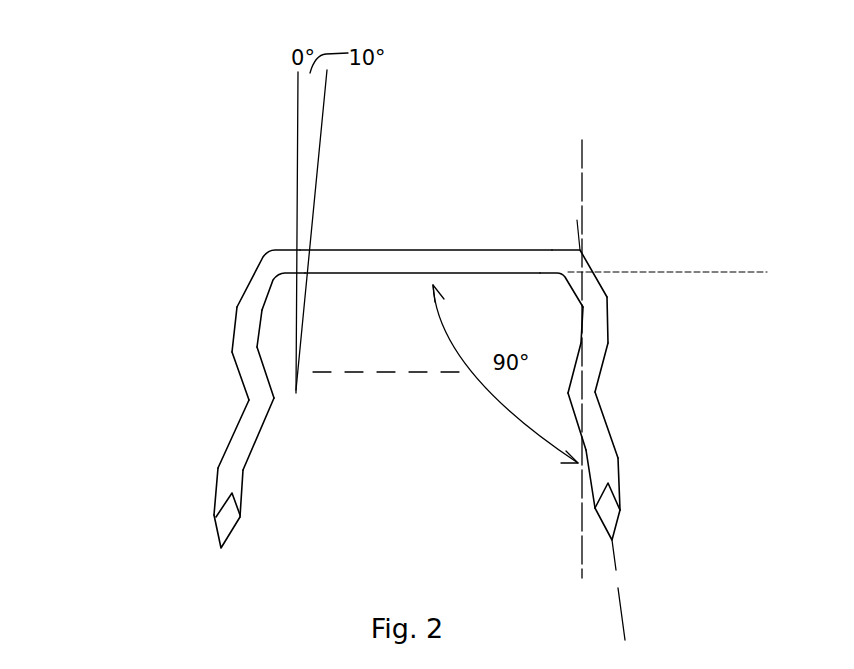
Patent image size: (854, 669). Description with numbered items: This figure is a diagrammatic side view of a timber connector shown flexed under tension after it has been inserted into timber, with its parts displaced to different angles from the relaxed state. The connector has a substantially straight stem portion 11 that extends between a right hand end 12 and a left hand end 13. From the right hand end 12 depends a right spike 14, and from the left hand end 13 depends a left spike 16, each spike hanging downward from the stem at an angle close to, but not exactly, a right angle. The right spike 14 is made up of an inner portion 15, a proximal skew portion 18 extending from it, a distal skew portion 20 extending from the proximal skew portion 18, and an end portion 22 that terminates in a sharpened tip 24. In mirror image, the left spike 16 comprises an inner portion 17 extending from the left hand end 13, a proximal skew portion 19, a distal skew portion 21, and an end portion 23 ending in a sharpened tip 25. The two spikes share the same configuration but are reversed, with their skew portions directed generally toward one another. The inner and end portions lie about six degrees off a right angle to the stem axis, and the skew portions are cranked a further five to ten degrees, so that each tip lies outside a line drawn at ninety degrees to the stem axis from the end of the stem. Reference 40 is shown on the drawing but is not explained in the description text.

The stem portion 11 is at (388, 262).
The right hand end 12 is at (562, 267).
The left hand end 13 is at (272, 263).
The right spike 14 is at (605, 390).
The inner portion 15 is at (617, 287).
The left spike 16 is at (215, 370).
The inner portion 17 is at (200, 300).
The proximal skew portion 18 is at (625, 340).
The proximal skew portion 19 is at (223, 390).
The distal skew portion 20 is at (617, 423).
The distal skew portion 21 is at (202, 448).
The end portion 22 is at (630, 462).
The end portion 23 is at (182, 495).
The sharpened tip 24 is at (638, 528).
The sharpened tip 25 is at (188, 562).
The spring clip 40 is at (410, 346).